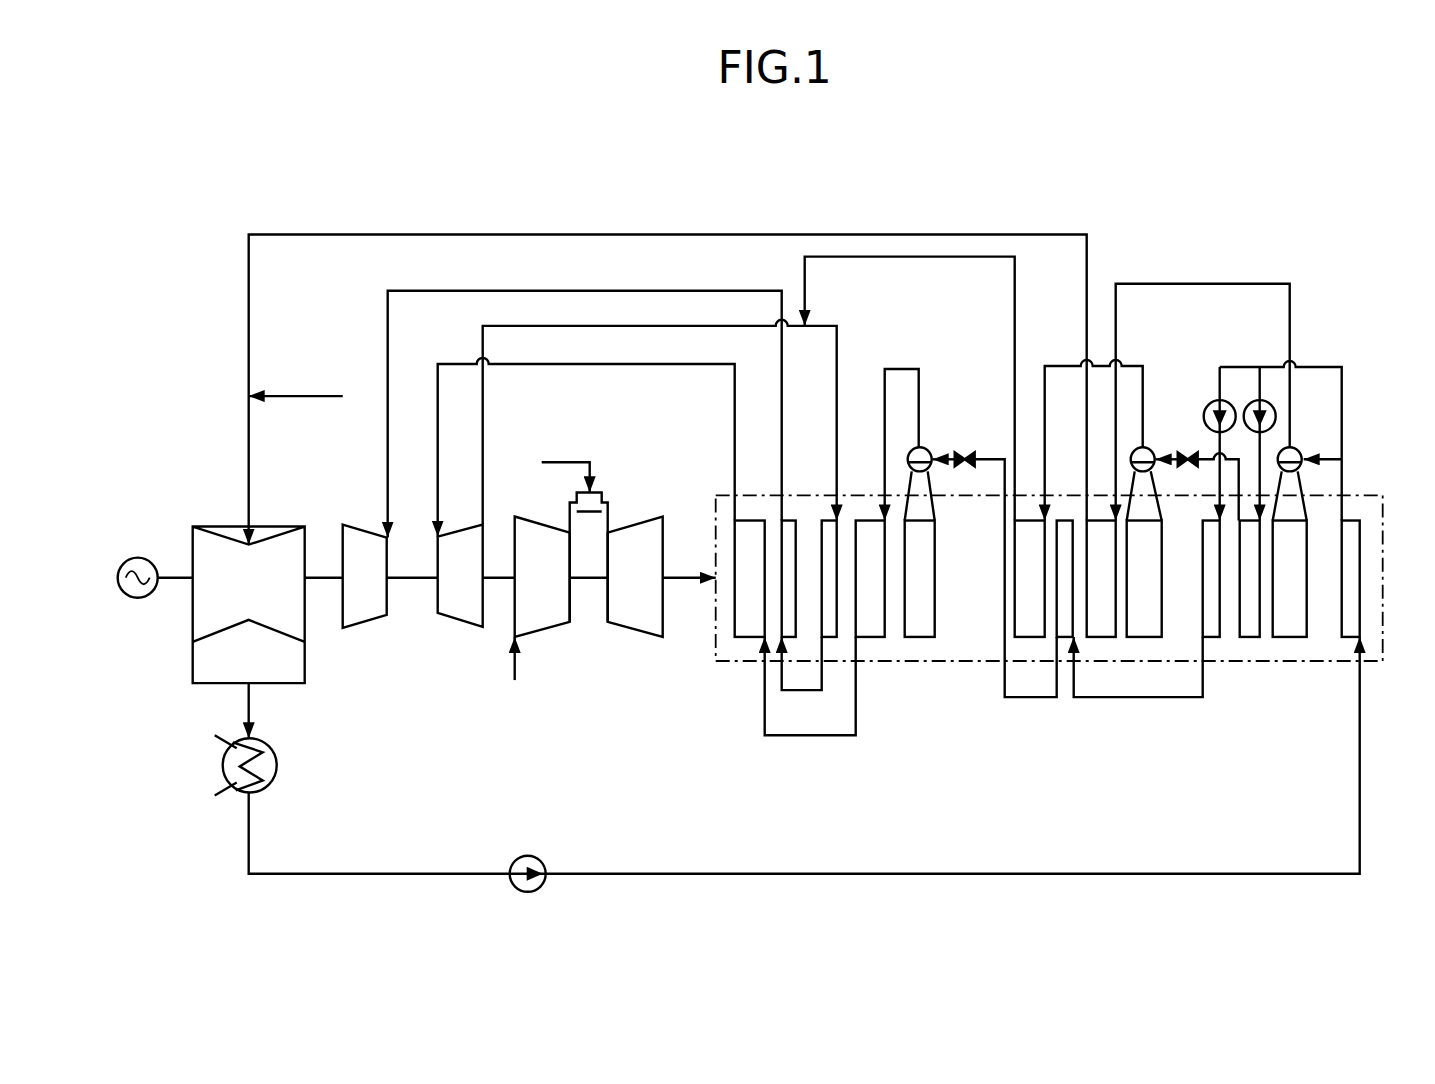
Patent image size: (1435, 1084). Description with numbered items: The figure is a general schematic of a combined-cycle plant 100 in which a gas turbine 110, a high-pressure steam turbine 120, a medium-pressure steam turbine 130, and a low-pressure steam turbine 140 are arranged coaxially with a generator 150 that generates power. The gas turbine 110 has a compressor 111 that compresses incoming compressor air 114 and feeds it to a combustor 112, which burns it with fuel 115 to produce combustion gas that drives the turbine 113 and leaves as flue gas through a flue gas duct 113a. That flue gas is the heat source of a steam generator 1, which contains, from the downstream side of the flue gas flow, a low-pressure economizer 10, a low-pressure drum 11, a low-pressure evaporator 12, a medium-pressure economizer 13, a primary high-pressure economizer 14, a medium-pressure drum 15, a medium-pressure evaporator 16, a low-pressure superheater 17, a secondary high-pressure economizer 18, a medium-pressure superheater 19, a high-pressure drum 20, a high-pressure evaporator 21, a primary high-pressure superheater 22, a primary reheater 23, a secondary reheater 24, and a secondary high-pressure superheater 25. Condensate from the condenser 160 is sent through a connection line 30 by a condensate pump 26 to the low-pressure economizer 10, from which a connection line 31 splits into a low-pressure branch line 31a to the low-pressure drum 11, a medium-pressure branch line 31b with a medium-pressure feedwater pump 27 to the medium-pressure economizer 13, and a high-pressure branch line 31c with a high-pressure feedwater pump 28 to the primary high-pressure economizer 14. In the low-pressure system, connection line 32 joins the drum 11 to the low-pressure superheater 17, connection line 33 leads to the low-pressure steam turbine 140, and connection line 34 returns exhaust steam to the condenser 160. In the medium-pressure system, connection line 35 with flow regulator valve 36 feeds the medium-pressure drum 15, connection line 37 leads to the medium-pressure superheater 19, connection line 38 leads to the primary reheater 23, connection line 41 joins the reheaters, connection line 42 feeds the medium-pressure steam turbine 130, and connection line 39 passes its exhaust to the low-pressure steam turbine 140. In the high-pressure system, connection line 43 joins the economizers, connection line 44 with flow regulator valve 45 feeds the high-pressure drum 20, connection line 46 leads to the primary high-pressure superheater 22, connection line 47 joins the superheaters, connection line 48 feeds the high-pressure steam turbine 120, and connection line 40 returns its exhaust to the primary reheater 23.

The steam generator 1 is at (1385, 537).
The low-pressure economizer 10 is at (1347, 640).
The low-pressure drum 11 is at (1300, 450).
The low-pressure evaporator 12 is at (1290, 640).
The medium-pressure economizer 13 is at (1250, 640).
The primary high-pressure economizer 14 is at (1213, 640).
The medium-pressure drum 15 is at (1135, 448).
The medium-pressure evaporator 16 is at (1143, 640).
The low-pressure superheater 17 is at (1100, 640).
The secondary high-pressure economizer 18 is at (1065, 521).
The medium-pressure superheater 19 is at (1030, 640).
The high-pressure drum 20 is at (925, 448).
The high-pressure evaporator 21 is at (925, 638).
The primary high-pressure superheater 22 is at (862, 521).
The primary reheater 23 is at (833, 520).
The secondary reheater 24 is at (790, 520).
The secondary high-pressure superheater 25 is at (740, 640).
The condensate pump 26 is at (528, 893).
The medium-pressure feedwater pump 27 is at (1273, 400).
The high-pressure feedwater pump 28 is at (1234, 400).
The connection line 30 is at (658, 875).
The connection line 31 is at (1315, 368).
The low-pressure branch line 31a is at (1320, 462).
The medium-pressure branch line 31b is at (1257, 385).
The high-pressure branch line 31c is at (1215, 388).
The connection line 32 is at (1155, 285).
The connection line 33 is at (927, 236).
The connection line 34 is at (193, 665).
The connection line 35 is at (1210, 455).
The flow regulator valve 36 is at (1182, 455).
The connection line 37 is at (1055, 367).
The connection line 38 is at (927, 262).
The connection line 39 is at (300, 397).
The connection line 40 is at (822, 327).
The connection line 41 is at (822, 678).
The connection line 42 is at (720, 292).
The connection line 43 is at (1165, 698).
The connection line 44 is at (1050, 698).
The flow regulator valve 45 is at (968, 453).
The connection line 46 is at (905, 370).
The connection line 47 is at (856, 735).
The connection line 48 is at (645, 365).
The combined-cycle plant 100 is at (1140, 175).
The gas turbine 110 is at (602, 572).
The compressor 111 is at (562, 625).
The combustor 112 is at (577, 493).
The turbine 113 is at (622, 626).
The flue gas duct 113a is at (700, 583).
The compressor air 114 is at (512, 678).
The fuel 115 is at (553, 463).
The high-pressure steam turbine 120 is at (462, 628).
The medium-pressure steam turbine 130 is at (375, 628).
The low-pressure steam turbine 140 is at (208, 527).
The generator 150 is at (138, 557).
The condenser 160 is at (221, 765).